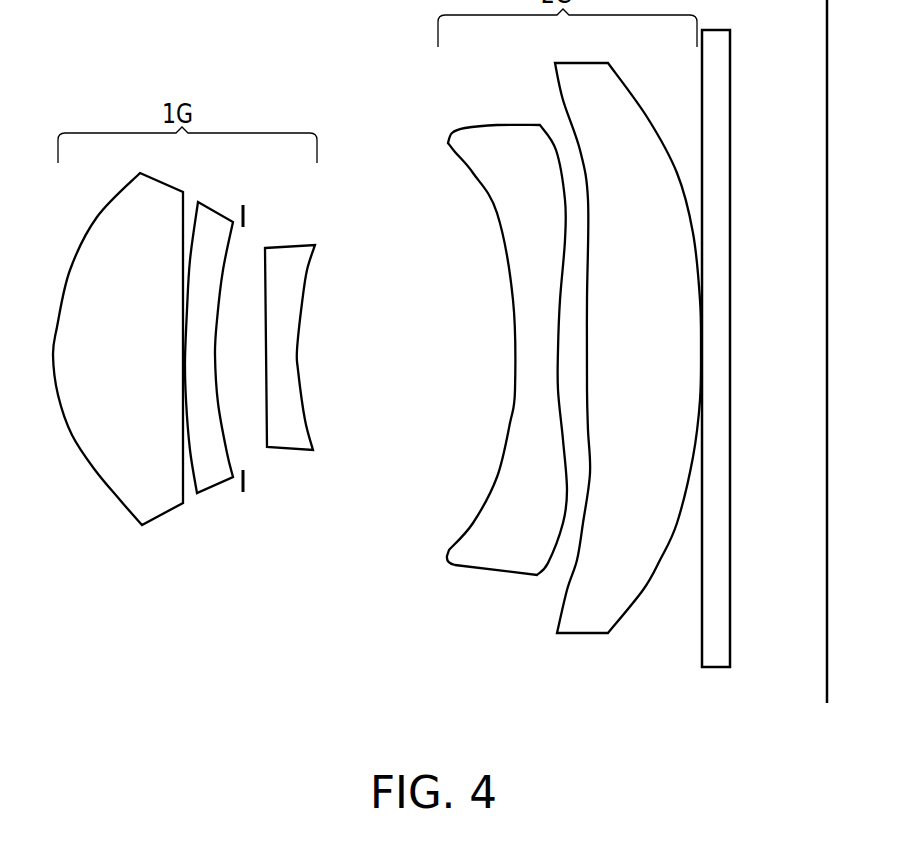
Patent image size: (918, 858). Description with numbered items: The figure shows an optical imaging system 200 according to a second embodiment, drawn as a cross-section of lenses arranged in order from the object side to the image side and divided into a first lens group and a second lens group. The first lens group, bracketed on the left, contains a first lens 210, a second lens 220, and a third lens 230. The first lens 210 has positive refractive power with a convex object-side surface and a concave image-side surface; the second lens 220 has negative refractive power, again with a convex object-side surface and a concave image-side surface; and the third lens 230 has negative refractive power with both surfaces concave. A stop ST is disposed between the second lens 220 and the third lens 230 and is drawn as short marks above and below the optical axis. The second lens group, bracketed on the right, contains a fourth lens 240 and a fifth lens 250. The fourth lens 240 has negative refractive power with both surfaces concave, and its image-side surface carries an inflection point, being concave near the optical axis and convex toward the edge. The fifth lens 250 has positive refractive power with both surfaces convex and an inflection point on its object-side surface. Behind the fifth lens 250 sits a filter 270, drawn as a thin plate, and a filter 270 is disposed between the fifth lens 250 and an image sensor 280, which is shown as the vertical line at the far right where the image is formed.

The optical imaging system 200 is at (105, 74).
The first lens 210 is at (155, 526).
The second lens 220 is at (215, 493).
The third lens 230 is at (290, 452).
The stop ST is at (247, 488).
The fourth lens 240 is at (480, 573).
The fifth lens 250 is at (577, 635).
The filter 270 is at (700, 645).
The image sensor 280 is at (825, 682).